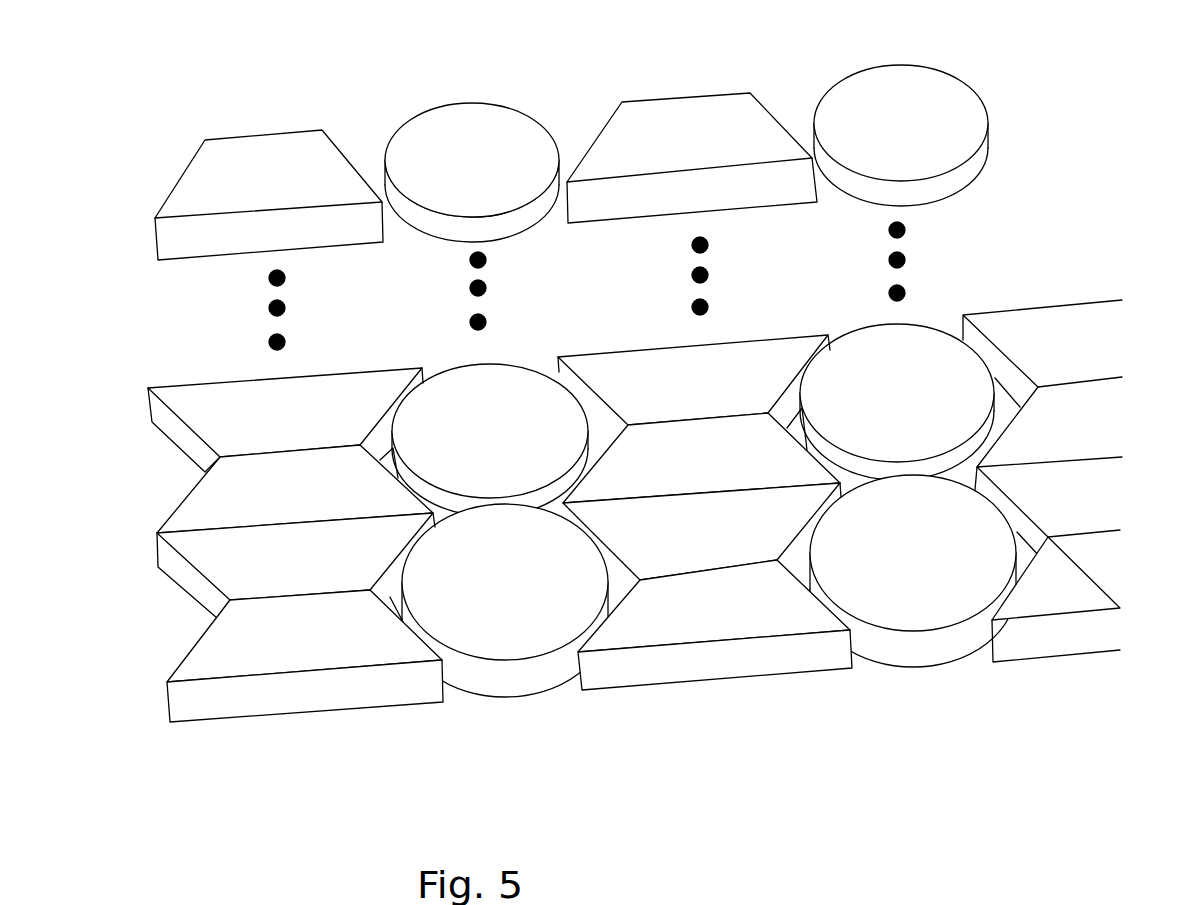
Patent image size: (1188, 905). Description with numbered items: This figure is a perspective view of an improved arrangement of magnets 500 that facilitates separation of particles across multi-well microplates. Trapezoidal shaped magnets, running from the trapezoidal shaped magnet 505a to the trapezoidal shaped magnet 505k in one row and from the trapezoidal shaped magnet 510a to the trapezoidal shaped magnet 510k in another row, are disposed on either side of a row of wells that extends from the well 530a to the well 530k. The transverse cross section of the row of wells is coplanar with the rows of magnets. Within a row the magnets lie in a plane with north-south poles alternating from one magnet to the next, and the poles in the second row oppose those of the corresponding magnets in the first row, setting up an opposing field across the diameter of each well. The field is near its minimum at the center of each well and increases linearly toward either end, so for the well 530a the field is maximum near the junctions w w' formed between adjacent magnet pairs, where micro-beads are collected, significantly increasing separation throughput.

The arrangement of magnets 500 is at (1103, 842).
The trapezoidal shaped magnet 505a is at (283, 697).
The trapezoidal shaped magnet 505k is at (242, 137).
The trapezoidal shaped magnet 510a is at (677, 670).
The trapezoidal shaped magnet 510k is at (737, 92).
The well 530a is at (485, 678).
The well 530k is at (483, 102).